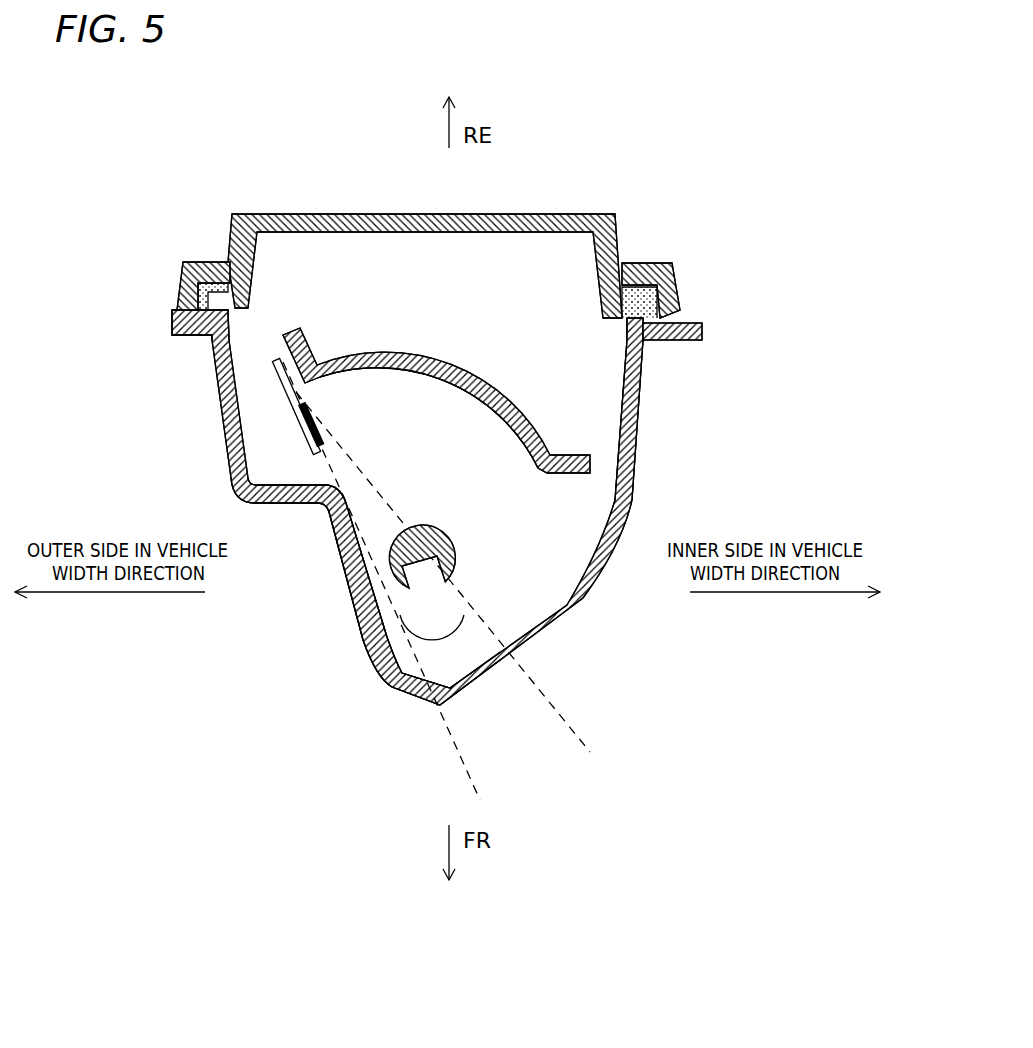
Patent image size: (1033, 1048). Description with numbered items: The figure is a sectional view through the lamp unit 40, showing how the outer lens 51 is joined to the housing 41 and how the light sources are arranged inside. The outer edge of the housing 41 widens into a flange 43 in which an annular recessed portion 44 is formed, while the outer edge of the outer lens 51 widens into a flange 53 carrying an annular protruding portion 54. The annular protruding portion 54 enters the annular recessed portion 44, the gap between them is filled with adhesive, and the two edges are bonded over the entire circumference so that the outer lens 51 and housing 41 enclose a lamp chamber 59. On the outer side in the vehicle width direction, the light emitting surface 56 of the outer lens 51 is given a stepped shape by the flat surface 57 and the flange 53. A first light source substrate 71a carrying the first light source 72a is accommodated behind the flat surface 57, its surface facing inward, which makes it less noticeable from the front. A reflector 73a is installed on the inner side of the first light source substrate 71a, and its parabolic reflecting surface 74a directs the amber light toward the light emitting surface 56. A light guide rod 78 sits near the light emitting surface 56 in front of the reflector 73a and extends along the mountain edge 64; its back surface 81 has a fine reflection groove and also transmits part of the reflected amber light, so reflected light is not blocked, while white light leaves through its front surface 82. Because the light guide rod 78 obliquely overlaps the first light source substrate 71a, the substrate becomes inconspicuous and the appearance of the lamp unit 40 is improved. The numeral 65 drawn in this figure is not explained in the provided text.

The lamp unit 40 is at (469, 206).
The housing 41 is at (560, 213).
The flange 43 is at (672, 268).
The annular recessed portion 44 is at (680, 312).
The outer lens 51 is at (623, 580).
The flange 53 is at (193, 337).
The annular protruding portion 54 is at (210, 272).
The light emitting surface 56 is at (415, 700).
The flat surface 57 is at (278, 505).
The lamp chamber 59 is at (466, 491).
The mountain edge 64 is at (325, 510).
The inner side wall 65 is at (645, 352).
The first light source substrate 71a is at (287, 400).
The first light source 72a is at (314, 417).
The reflector 73a is at (487, 376).
The reflecting surface 74a is at (453, 385).
The light guide rod 78 is at (443, 586).
The back surface 81 is at (415, 556).
The front surface 82 is at (447, 640).